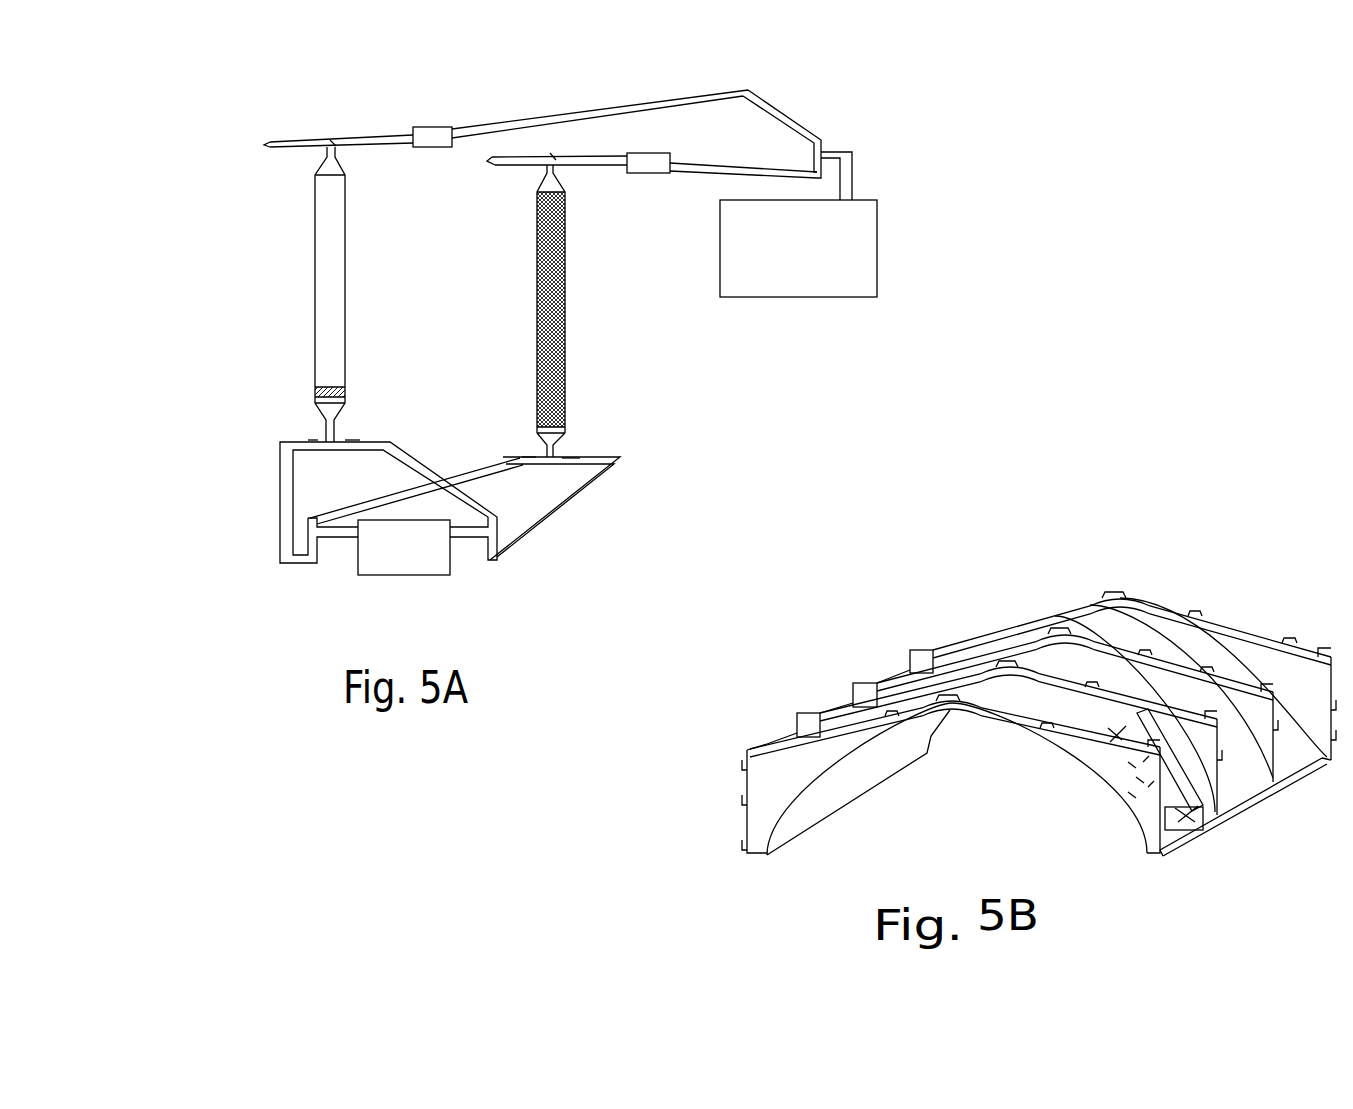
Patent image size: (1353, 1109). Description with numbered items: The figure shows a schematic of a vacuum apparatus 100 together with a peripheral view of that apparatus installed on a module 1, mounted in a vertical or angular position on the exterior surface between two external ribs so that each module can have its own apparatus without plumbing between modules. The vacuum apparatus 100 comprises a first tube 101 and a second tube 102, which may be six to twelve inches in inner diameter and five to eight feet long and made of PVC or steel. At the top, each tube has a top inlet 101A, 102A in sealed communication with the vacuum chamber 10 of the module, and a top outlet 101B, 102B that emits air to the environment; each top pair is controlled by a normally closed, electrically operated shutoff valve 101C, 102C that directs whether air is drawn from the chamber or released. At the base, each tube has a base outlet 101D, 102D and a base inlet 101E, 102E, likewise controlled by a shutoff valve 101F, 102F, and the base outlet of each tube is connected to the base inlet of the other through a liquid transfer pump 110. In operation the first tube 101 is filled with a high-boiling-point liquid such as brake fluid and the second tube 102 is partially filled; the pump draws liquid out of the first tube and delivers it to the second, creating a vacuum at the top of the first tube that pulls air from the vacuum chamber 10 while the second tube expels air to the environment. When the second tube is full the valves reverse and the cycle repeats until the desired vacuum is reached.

In FIG. 5A, the vacuum apparatus 100 is at (948, 133).
In FIG. 5B, the vacuum apparatus 100 is at (1205, 835).
In FIG. 5A, the first tube 101 is at (325, 287).
In FIG. 5A, the top inlet 101A is at (370, 140).
In FIG. 5A, the top outlet 101B is at (307, 140).
In FIG. 5A, the shutoff valve 101C is at (330, 140).
In FIG. 5A, the base outlet 101D is at (310, 440).
In FIG. 5A, the base inlet 101E is at (353, 440).
In FIG. 5A, the shutoff valve 101F is at (322, 462).
In FIG. 5A, the second tube 102 is at (563, 288).
In FIG. 5A, the top inlet 102A is at (587, 153).
In FIG. 5A, the top outlet 102B is at (520, 153).
In FIG. 5A, the shutoff valve 102C is at (553, 153).
In FIG. 5A, the base outlet 102D is at (570, 458).
In FIG. 5A, the base inlet 102E is at (530, 457).
In FIG. 5A, the shutoff valve 102F is at (557, 492).
In FIG. 5A, the vacuum chamber 10 is at (805, 283).
In FIG. 5A, the liquid transfer pump 110 is at (430, 563).
In FIG. 5B, the module 1 is at (1233, 783).